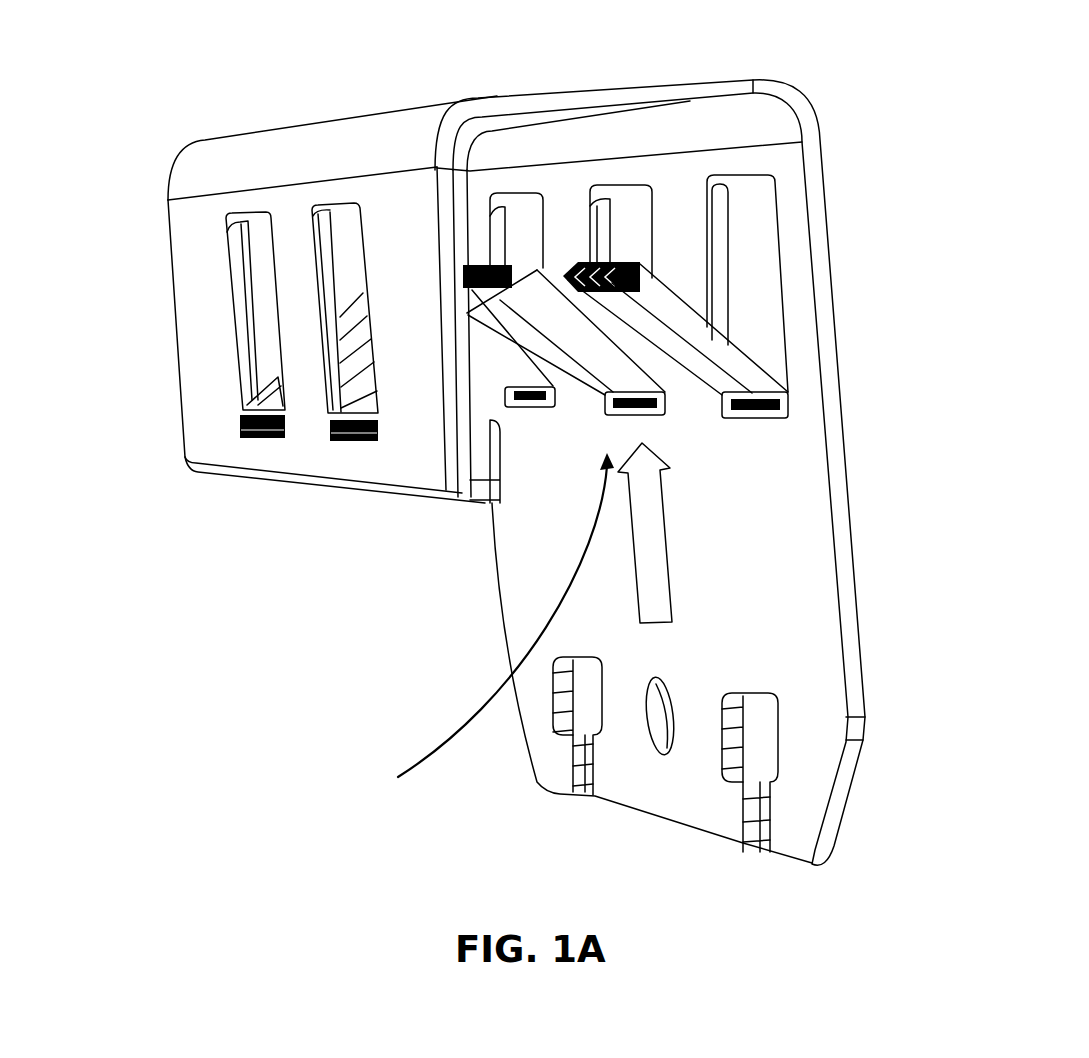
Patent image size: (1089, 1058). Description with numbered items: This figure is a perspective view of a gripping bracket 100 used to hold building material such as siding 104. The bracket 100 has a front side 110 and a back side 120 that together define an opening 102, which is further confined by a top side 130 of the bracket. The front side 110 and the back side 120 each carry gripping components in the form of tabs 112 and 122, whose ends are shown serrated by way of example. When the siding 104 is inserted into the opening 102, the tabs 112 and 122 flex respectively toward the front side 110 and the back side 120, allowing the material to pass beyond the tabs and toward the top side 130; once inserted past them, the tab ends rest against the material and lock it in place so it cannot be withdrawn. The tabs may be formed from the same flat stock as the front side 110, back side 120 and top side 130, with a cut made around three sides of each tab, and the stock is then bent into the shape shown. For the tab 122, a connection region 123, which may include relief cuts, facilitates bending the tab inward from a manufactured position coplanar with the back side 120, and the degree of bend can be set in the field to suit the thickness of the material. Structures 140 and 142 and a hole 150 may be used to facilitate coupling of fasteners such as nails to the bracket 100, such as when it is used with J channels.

The gripping bracket 100 is at (1002, 58).
The opening 102 is at (487, 622).
The siding 104 is at (664, 556).
The front side 110 is at (176, 279).
The tab 112 is at (487, 317).
The back side 120 is at (845, 398).
The tab 122 is at (692, 355).
The connection region 123 is at (773, 418).
The top side 130 is at (638, 84).
The structure 140 is at (590, 797).
The structure 142 is at (766, 843).
The hole 150 is at (655, 677).